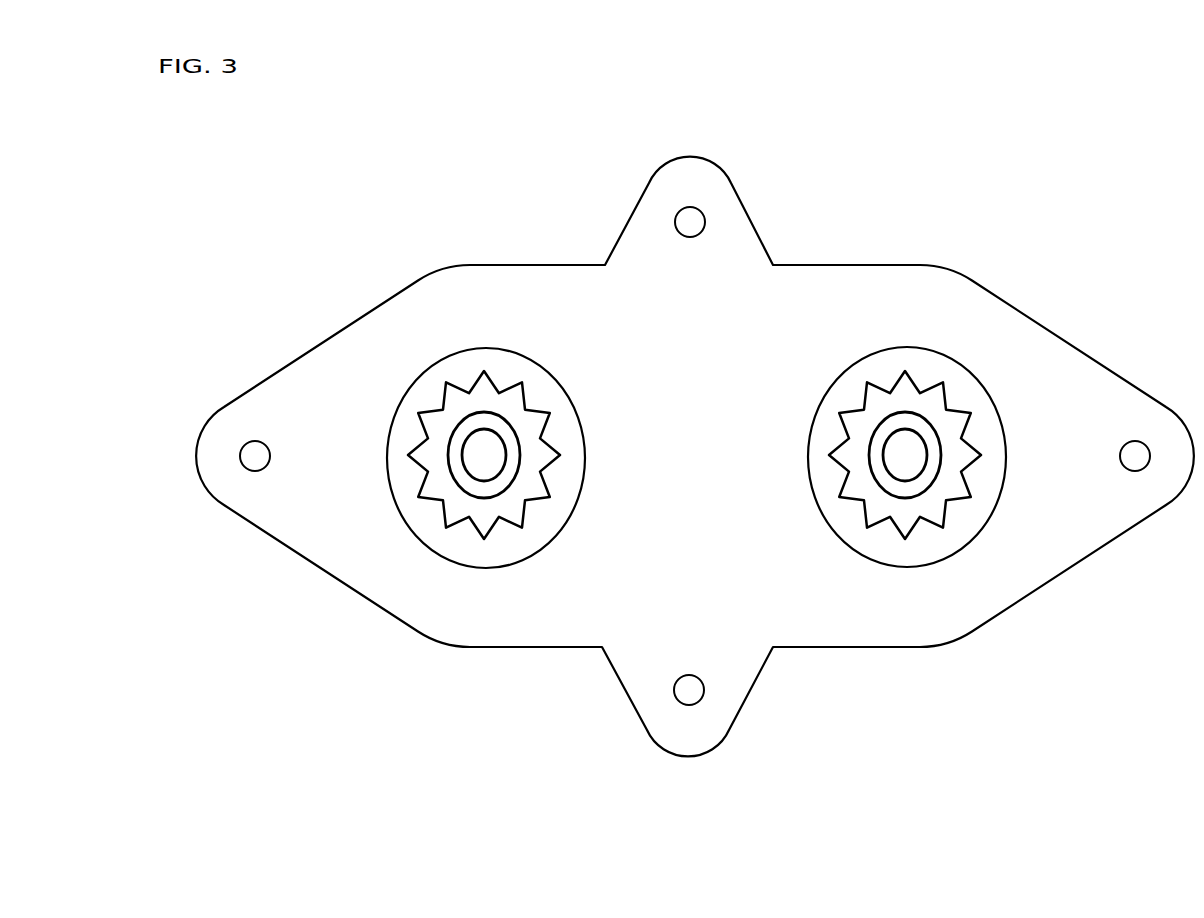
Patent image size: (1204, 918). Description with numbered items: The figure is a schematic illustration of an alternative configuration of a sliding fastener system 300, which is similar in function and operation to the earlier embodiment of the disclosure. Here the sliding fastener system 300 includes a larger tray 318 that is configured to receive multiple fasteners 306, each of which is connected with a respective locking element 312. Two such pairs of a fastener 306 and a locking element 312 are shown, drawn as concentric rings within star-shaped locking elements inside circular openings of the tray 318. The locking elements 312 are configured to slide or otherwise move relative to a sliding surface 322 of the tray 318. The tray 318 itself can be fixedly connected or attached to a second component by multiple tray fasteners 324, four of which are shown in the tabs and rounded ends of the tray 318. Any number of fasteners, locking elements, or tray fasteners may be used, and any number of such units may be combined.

The sliding fastener system 300 is at (1003, 178).
The fastener 306 is at (490, 453).
The locking element 312 is at (528, 377).
The tray 318 is at (260, 510).
The sliding surface 322 is at (665, 456).
The tray fastener 324 is at (690, 222).